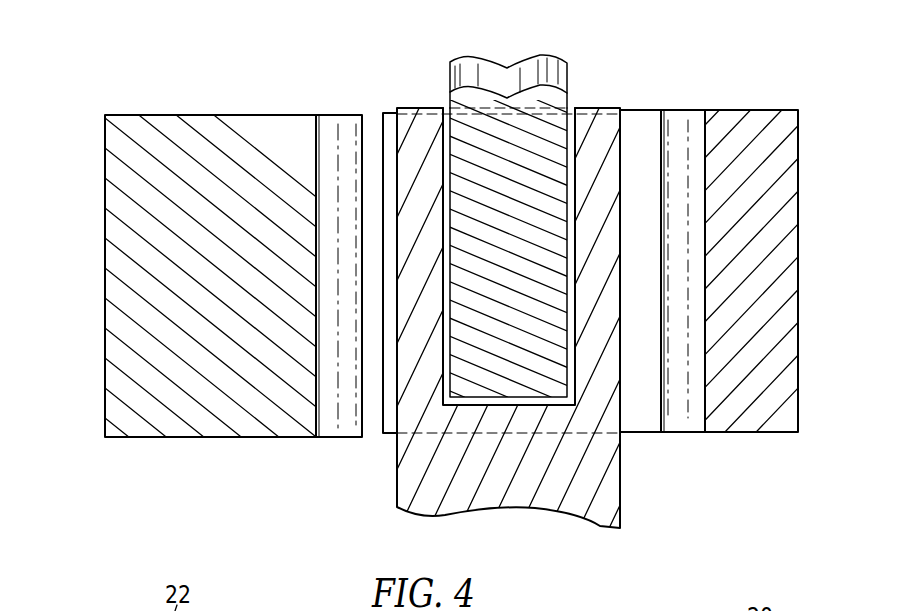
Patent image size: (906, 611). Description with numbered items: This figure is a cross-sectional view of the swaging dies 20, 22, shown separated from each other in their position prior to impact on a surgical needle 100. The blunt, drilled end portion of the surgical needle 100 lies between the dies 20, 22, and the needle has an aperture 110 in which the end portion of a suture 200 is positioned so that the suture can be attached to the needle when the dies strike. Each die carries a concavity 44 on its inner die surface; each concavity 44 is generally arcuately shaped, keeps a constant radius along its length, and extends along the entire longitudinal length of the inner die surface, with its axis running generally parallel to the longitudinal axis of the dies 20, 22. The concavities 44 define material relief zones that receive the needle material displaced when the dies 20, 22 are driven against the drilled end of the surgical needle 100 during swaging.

The die 20 is at (797, 0).
The die 22 is at (100, 368).
The concavity 44 is at (345, 420).
The surgical needle 100 is at (397, 492).
The aperture 110 is at (448, 113).
The suture 200 is at (547, 77).